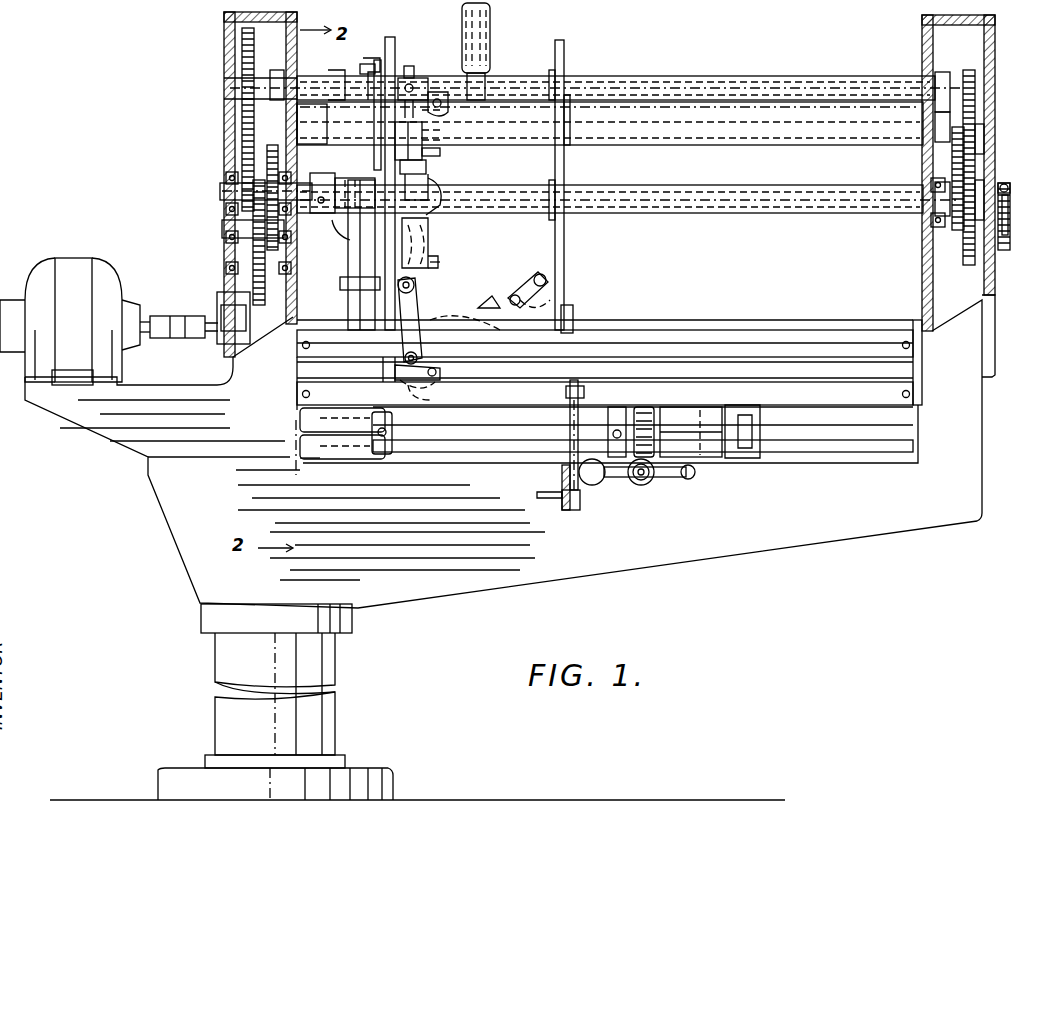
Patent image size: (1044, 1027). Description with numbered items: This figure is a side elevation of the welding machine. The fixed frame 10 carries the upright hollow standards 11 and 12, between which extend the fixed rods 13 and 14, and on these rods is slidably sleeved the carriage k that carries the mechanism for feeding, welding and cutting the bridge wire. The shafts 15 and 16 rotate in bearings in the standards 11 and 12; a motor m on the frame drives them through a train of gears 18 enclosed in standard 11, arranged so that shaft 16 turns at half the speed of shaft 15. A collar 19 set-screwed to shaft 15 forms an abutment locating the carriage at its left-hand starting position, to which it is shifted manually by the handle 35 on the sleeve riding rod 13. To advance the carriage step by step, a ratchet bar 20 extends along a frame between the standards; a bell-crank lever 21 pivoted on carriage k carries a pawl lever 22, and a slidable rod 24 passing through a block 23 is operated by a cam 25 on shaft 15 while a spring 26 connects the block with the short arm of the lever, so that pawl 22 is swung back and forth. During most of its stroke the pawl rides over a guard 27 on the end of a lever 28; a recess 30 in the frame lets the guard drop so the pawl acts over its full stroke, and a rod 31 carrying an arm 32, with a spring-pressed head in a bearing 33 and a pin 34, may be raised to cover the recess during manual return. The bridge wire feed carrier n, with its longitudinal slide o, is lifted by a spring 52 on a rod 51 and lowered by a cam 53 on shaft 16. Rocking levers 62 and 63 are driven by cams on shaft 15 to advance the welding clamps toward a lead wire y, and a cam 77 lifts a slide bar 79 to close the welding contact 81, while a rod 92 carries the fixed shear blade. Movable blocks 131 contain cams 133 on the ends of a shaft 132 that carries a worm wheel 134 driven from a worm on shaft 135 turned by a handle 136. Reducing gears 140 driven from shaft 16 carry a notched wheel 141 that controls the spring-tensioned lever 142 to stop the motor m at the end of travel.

The fixed frame 10 is at (778, 540).
The upright hollow standard 11 is at (224, 40).
The upright hollow standard 12 is at (995, 50).
The fixed rod 13 is at (700, 135).
The fixed rod 14 is at (712, 324).
The shaft 15 is at (775, 212).
The shaft 16 is at (782, 82).
The train of gears 18 is at (226, 209).
The collar 19 is at (316, 176).
The ratchet bar 20 is at (642, 380).
The bell-crank lever 21 is at (418, 318).
The pawl lever 22 is at (428, 380).
The block 23 is at (430, 248).
The slidable rod 24 is at (430, 230).
The cam 25 is at (428, 170).
The spring 26 is at (440, 264).
The guard 27 is at (442, 373).
The lever 28 is at (432, 396).
The recess 30 is at (578, 386).
The rod 31 is at (572, 422).
The arm 32 is at (584, 392).
The bearing 33 is at (580, 500).
The pin 34 is at (550, 492).
The handle 35 is at (491, 45).
The rod 51 is at (438, 210).
The spring 52 is at (440, 152).
The cam 53 is at (434, 92).
The rocking lever 62 is at (348, 256).
The rocking lever 63 is at (348, 305).
The cam 77 is at (430, 185).
The slide bar 79 is at (372, 150).
The contact 81 is at (437, 90).
The rod 92 is at (372, 90).
The movable block 131 is at (305, 456).
The shaft 132 is at (476, 448).
The cam 133 is at (300, 410).
The worm wheel 134 is at (660, 408).
The shaft 135 is at (650, 482).
The handle 136 is at (616, 480).
The reducing gears 140 is at (990, 160).
The notched wheel 141 is at (1010, 240).
The spring-tensioned lever 142 is at (1009, 188).
The motor m is at (72, 262).
The carriage k is at (566, 46).
The bridge wire feed carrier n is at (512, 290).
The slide o is at (482, 304).
The lead wire y is at (352, 398).